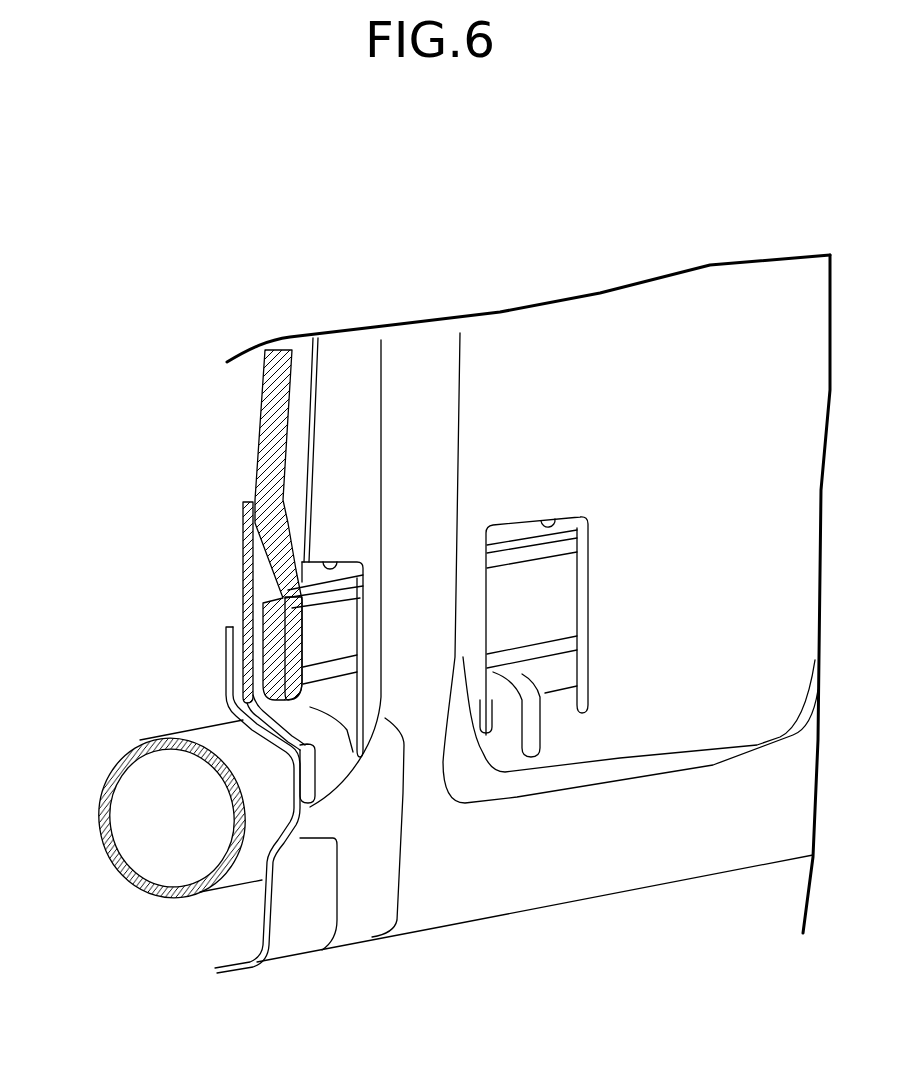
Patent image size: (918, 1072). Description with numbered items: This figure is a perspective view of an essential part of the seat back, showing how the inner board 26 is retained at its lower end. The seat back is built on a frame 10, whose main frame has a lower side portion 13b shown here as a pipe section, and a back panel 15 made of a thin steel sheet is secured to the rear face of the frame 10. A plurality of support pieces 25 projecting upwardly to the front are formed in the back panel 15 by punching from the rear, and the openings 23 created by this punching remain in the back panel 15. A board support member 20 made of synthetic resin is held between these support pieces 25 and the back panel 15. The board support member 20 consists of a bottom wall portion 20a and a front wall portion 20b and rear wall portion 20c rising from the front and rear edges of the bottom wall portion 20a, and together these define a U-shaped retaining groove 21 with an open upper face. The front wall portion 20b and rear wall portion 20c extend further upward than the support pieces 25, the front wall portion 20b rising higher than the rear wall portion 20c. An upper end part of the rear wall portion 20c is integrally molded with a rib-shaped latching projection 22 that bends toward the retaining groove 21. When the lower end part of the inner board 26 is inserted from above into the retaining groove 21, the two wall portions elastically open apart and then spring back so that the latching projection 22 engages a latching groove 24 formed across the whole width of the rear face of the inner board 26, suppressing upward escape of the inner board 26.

The frame 10 is at (107, 763).
The lower side portion 13b is at (108, 853).
The back panel 15 is at (362, 352).
The board support member 20 is at (327, 633).
The bottom wall portion 20a is at (272, 700).
The front wall portion 20b is at (243, 552).
The rear wall portion 20c is at (307, 667).
The retaining groove 21 is at (243, 683).
The latching projection 22 is at (276, 598).
The opening 23 is at (341, 563).
The latching groove 24 is at (287, 595).
The support piece 25 is at (230, 668).
The inner board 26 is at (280, 352).